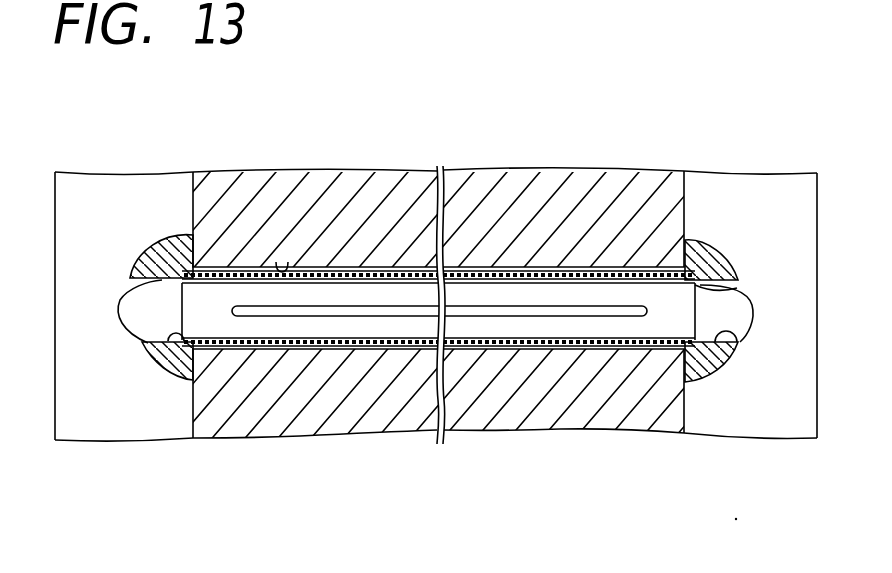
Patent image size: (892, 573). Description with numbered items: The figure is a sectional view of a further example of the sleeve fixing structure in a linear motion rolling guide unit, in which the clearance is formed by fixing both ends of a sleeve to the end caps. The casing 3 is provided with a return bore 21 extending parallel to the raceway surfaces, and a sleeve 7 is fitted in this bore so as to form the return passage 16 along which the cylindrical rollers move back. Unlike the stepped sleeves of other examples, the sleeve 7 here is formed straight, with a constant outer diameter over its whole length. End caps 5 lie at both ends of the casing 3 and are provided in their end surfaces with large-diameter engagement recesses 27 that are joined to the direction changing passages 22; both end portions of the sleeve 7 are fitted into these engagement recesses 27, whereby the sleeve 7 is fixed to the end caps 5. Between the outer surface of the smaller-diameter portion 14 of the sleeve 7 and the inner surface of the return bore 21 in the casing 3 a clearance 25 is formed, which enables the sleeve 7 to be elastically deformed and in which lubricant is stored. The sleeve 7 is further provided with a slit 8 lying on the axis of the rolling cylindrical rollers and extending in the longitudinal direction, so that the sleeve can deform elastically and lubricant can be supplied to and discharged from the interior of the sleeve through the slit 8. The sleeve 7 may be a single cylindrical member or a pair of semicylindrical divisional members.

The casing 3 is at (446, 310).
The end cap 5 is at (122, 218).
The sleeve 7 is at (385, 266).
The slit 8 is at (398, 316).
The smaller-diameter portion 14 is at (612, 243).
The return passage 16 is at (306, 330).
The return bore 21 is at (282, 262).
The direction changing passage 22 is at (136, 290).
The clearance 25 is at (478, 268).
The engagement recess 27 is at (160, 350).